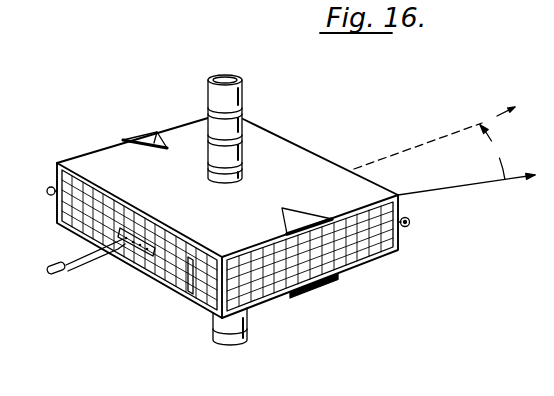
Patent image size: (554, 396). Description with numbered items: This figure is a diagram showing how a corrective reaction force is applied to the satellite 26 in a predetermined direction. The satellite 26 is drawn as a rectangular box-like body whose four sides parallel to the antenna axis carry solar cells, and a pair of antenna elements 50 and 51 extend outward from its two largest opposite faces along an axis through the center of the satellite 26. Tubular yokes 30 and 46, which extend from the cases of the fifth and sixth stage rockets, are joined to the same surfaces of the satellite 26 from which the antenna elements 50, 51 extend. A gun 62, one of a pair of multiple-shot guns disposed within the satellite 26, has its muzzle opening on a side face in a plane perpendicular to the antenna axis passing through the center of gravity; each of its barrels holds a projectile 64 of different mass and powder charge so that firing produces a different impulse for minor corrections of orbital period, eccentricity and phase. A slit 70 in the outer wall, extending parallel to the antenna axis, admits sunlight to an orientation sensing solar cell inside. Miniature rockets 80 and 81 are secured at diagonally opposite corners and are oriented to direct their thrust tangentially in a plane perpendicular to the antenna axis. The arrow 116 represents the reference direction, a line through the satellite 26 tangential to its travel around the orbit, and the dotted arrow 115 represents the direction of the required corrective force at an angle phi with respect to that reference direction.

The satellite 26 is at (102, 157).
The tubular yoke 46 is at (154, 134).
The antenna element 50 is at (241, 95).
The antenna element 51 is at (247, 344).
The tubular yoke 30 is at (305, 218).
The miniature rocket 81 is at (50, 187).
The miniature rocket 80 is at (407, 221).
The gun 62 is at (152, 258).
The projectile 64 is at (68, 273).
The slit 70 is at (190, 292).
The dotted arrow 115 is at (482, 123).
The arrow 116 is at (510, 178).